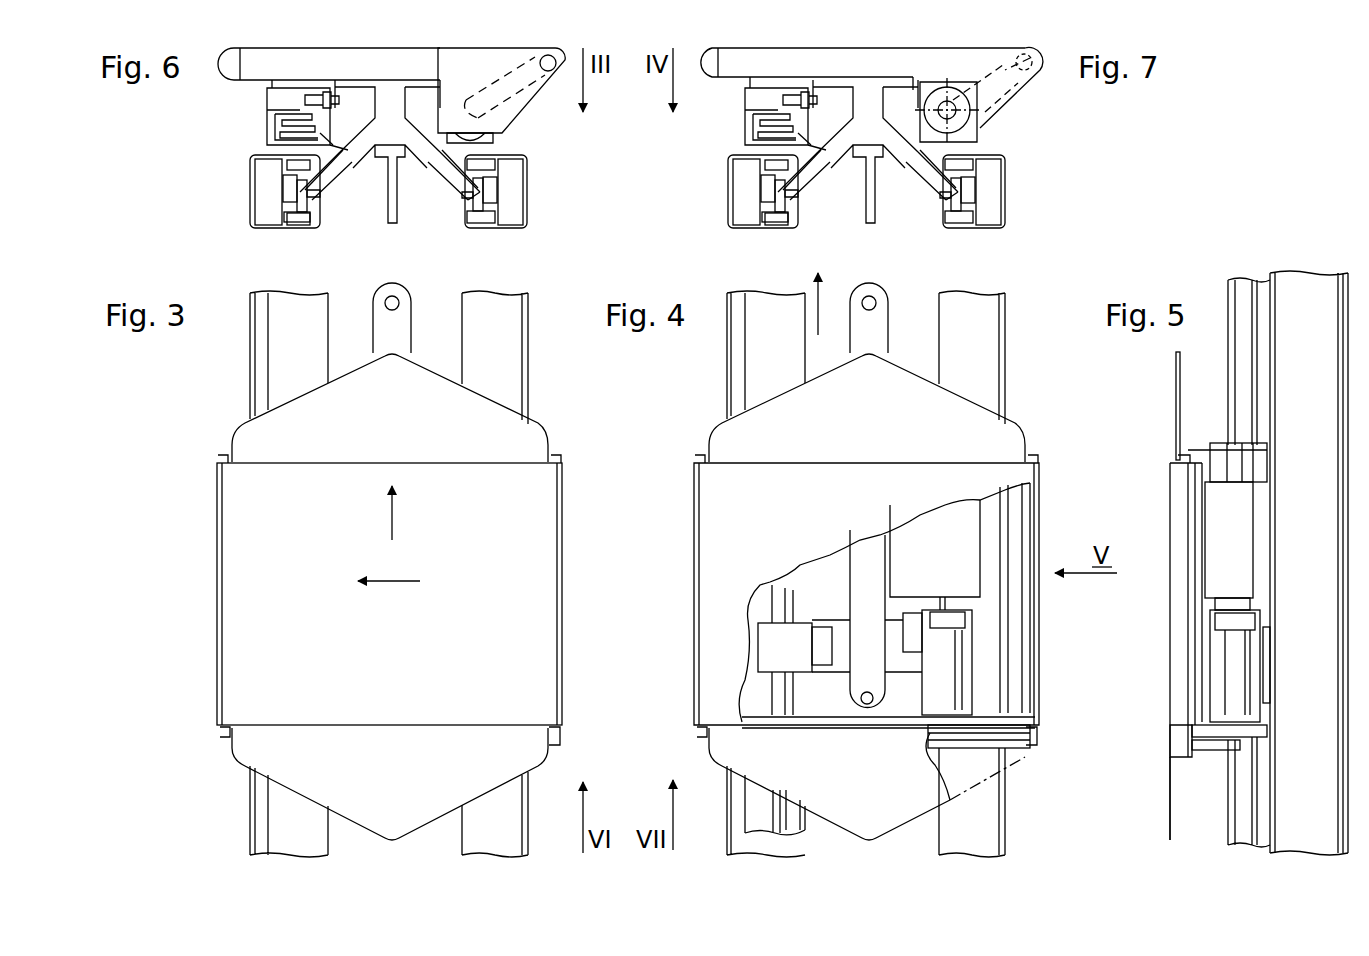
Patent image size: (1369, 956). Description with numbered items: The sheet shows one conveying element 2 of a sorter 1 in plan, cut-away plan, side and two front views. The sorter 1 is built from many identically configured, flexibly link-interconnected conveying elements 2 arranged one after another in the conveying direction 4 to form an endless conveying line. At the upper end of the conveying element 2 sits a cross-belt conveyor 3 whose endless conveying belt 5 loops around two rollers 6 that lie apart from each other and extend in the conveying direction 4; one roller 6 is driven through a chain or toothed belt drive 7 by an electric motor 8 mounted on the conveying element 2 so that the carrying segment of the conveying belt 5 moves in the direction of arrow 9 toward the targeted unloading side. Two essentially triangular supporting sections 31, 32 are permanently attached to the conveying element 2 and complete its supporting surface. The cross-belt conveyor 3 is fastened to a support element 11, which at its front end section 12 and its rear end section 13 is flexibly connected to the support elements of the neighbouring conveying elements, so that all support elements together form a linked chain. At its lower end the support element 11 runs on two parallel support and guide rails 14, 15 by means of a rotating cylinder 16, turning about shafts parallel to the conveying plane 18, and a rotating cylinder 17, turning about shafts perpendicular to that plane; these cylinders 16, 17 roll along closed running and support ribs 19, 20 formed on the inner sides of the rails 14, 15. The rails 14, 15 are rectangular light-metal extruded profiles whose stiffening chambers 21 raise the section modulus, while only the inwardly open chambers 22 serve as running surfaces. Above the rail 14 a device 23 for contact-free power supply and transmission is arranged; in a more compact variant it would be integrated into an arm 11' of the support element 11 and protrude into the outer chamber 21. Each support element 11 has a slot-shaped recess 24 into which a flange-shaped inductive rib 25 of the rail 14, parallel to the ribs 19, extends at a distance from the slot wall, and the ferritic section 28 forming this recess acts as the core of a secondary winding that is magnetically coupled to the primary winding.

In FIG. 3, the sorter 1 is at (212, 493).
In FIG. 4, the sorter 1 is at (690, 493).
In FIG. 3, the conveying element 2 is at (212, 560).
In FIG. 4, the conveying element 2 is at (690, 560).
In FIG. 6, the cross-belt conveyor 3 is at (268, 66).
In FIG. 7, the cross-belt conveyor 3 is at (972, 66).
In FIG. 3, the cross-belt conveyor 3 is at (228, 633).
In FIG. 4, the cross-belt conveyor 3 is at (712, 630).
In FIG. 3, the conveying direction 4 is at (395, 530).
In FIG. 4, the conveying direction 4 is at (818, 328).
In FIG. 3, the conveying belt 5 is at (397, 664).
In FIG. 4, the conveying belt 5 is at (812, 502).
In FIG. 5, the conveying belt 5 is at (1177, 650).
In FIG. 3, the roller 6 is at (225, 455).
In FIG. 5, the roller 6 is at (1178, 458).
In FIG. 6, the chain or toothed belt drive 7 is at (533, 90).
In FIG. 7, the chain or toothed belt drive 7 is at (975, 120).
In FIG. 4, the chain or toothed belt drive 7 is at (1025, 757).
In FIG. 5, the chain or toothed belt drive 7 is at (1212, 745).
In FIG. 6, the electric motor 8 is at (495, 135).
In FIG. 7, the electric motor 8 is at (967, 128).
In FIG. 5, the electric motor 8 is at (1230, 682).
In FIG. 3, the arrow (belt movement direction) 9 is at (402, 580).
In FIG. 6, the support element 11 is at (440, 193).
In FIG. 7, the support element 11 is at (919, 193).
In FIG. 4, the support element 11 is at (759, 619).
In FIG. 6, the arm of the support element 11' is at (348, 193).
In FIG. 7, the arm of the support element 11' is at (824, 193).
In FIG. 3, the front end section 12 is at (405, 296).
In FIG. 4, the front end section 12 is at (888, 296).
In FIG. 4, the rear end section 13 is at (845, 706).
In FIG. 6, the support and guide rail 14 is at (247, 222).
In FIG. 7, the support and guide rail 14 is at (726, 207).
In FIG. 3, the support and guide rail 14 is at (258, 350).
In FIG. 4, the support and guide rail 14 is at (737, 350).
In FIG. 6, the support and guide rail 15 is at (534, 212).
In FIG. 7, the support and guide rail 15 is at (1007, 207).
In FIG. 3, the support and guide rail 15 is at (517, 353).
In FIG. 4, the support and guide rail 15 is at (992, 352).
In FIG. 5, the support and guide rail 15 is at (1297, 290).
In FIG. 6, the rotating cylinder 16 is at (313, 228).
In FIG. 6, the rotating cylinder 17 is at (280, 200).
In FIG. 6, the conveying plane 18 is at (447, 47).
In FIG. 6, the running and support rib 19 is at (296, 224).
In FIG. 6, the running and support rib 20 is at (300, 193).
In FIG. 6, the chamber 21 is at (288, 165).
In FIG. 6, the chamber (inwardly open) 22 is at (287, 185).
In FIG. 6, the device for contact-free power supply and transmission 23 is at (262, 127).
In FIG. 6, the slot-shaped recess 24 is at (303, 130).
In FIG. 6, the inductive rib 25 is at (298, 118).
In FIG. 6, the section of the support element 28 is at (333, 133).
In FIG. 7, the section of the support element 28 is at (752, 118).
In FIG. 4, the section of the support element 28 is at (767, 657).
In FIG. 3, the supporting section 31 is at (405, 416).
In FIG. 4, the supporting section 31 is at (880, 416).
In FIG. 5, the supporting section 31 is at (1176, 383).
In FIG. 3, the supporting section 32 is at (405, 786).
In FIG. 4, the supporting section 32 is at (882, 788).
In FIG. 5, the supporting section 32 is at (1172, 820).